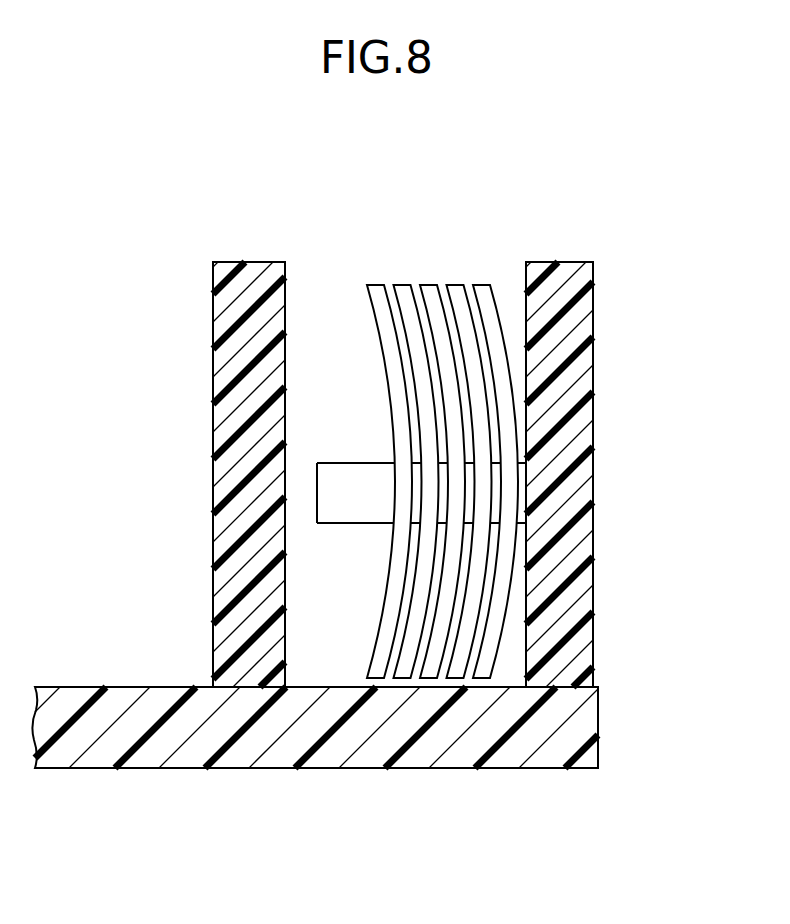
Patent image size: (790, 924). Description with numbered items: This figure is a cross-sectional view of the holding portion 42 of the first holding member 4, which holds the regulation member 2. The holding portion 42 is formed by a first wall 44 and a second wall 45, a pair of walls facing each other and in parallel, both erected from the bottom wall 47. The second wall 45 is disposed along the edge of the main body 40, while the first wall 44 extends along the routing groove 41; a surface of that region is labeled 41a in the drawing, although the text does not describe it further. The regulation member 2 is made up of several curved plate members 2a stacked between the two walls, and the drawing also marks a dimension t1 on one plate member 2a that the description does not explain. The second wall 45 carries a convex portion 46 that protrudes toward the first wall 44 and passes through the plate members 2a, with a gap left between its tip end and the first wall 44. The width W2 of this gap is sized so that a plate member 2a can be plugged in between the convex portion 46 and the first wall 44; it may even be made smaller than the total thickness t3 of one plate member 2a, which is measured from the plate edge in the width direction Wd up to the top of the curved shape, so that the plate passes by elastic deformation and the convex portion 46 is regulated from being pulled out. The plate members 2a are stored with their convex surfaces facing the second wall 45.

The first holding member 4 is at (165, 233).
The first wall 44 is at (259, 274).
The second wall 45 is at (578, 272).
The holding portion 42 is at (595, 446).
The main body 40 is at (351, 752).
The routing groove 41 is at (315, 752).
The upper surface of first member 41a is at (117, 687).
The bottom wall 47 is at (366, 760).
The convex portion 46 is at (348, 463).
The regulation member 2 is at (434, 404).
The plate member 2a is at (510, 183).
The width of the gap W2 is at (318, 250).
The fin thickness t1 is at (460, 272).
The total thickness t3 is at (410, 482).
The width direction Wd is at (669, 384).